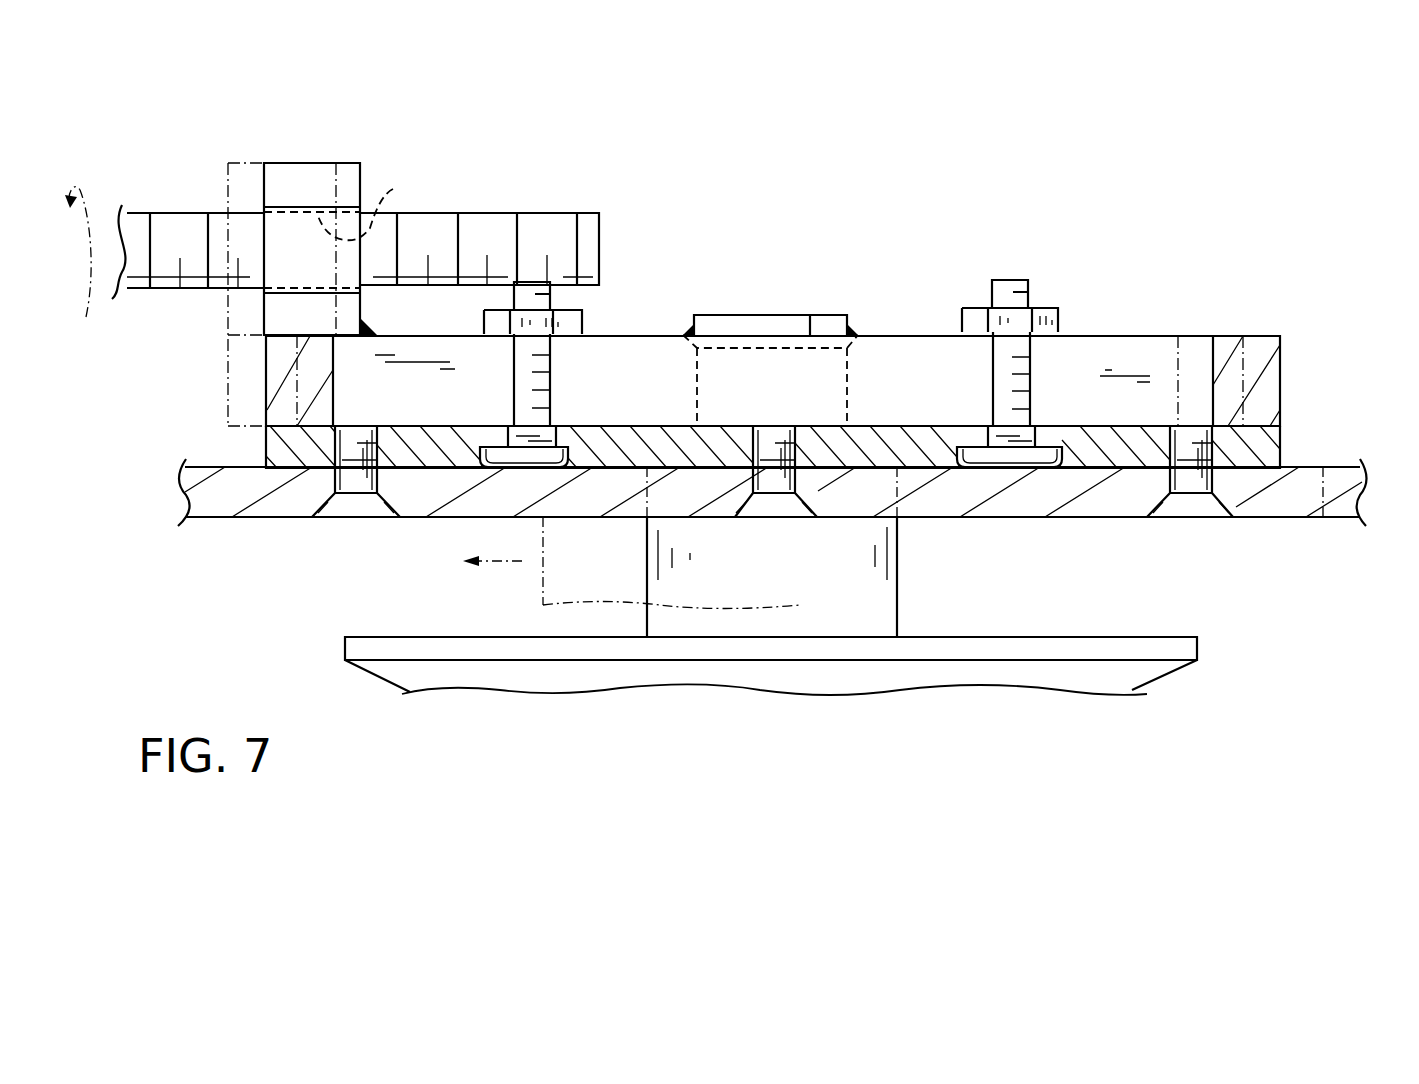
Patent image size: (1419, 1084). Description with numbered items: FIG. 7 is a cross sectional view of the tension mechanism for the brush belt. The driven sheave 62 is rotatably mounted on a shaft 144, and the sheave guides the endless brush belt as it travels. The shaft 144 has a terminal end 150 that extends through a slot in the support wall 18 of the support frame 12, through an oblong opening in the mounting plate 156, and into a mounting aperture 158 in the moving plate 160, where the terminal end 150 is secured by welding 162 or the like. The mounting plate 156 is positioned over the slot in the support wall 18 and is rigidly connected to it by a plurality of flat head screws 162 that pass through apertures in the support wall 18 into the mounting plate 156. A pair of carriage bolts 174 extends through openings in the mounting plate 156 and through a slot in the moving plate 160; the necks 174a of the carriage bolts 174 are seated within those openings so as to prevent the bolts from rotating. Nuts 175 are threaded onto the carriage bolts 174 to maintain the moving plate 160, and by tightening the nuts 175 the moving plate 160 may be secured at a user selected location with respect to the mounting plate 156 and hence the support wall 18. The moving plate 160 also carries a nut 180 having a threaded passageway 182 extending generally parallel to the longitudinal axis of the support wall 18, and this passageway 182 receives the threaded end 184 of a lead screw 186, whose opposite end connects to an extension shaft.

The support frame 12 is at (1338, 517).
The support wall 18 is at (1358, 495).
The driven sheave 62 is at (1082, 688).
The shaft 144 is at (905, 612).
The terminal end 150 is at (770, 314).
The mounting plate 156 is at (1287, 447).
The mounting aperture 158 is at (700, 405).
The moving plate 160 is at (1120, 335).
The flat head screws 162 is at (851, 332).
The carriage bolts 174 is at (535, 383).
The necks 174a is at (524, 440).
The nuts 175 is at (567, 326).
The nut 180 is at (312, 162).
The threaded passageway 182 is at (393, 190).
The threaded end 184 is at (577, 212).
The lead screw 186 is at (175, 222).